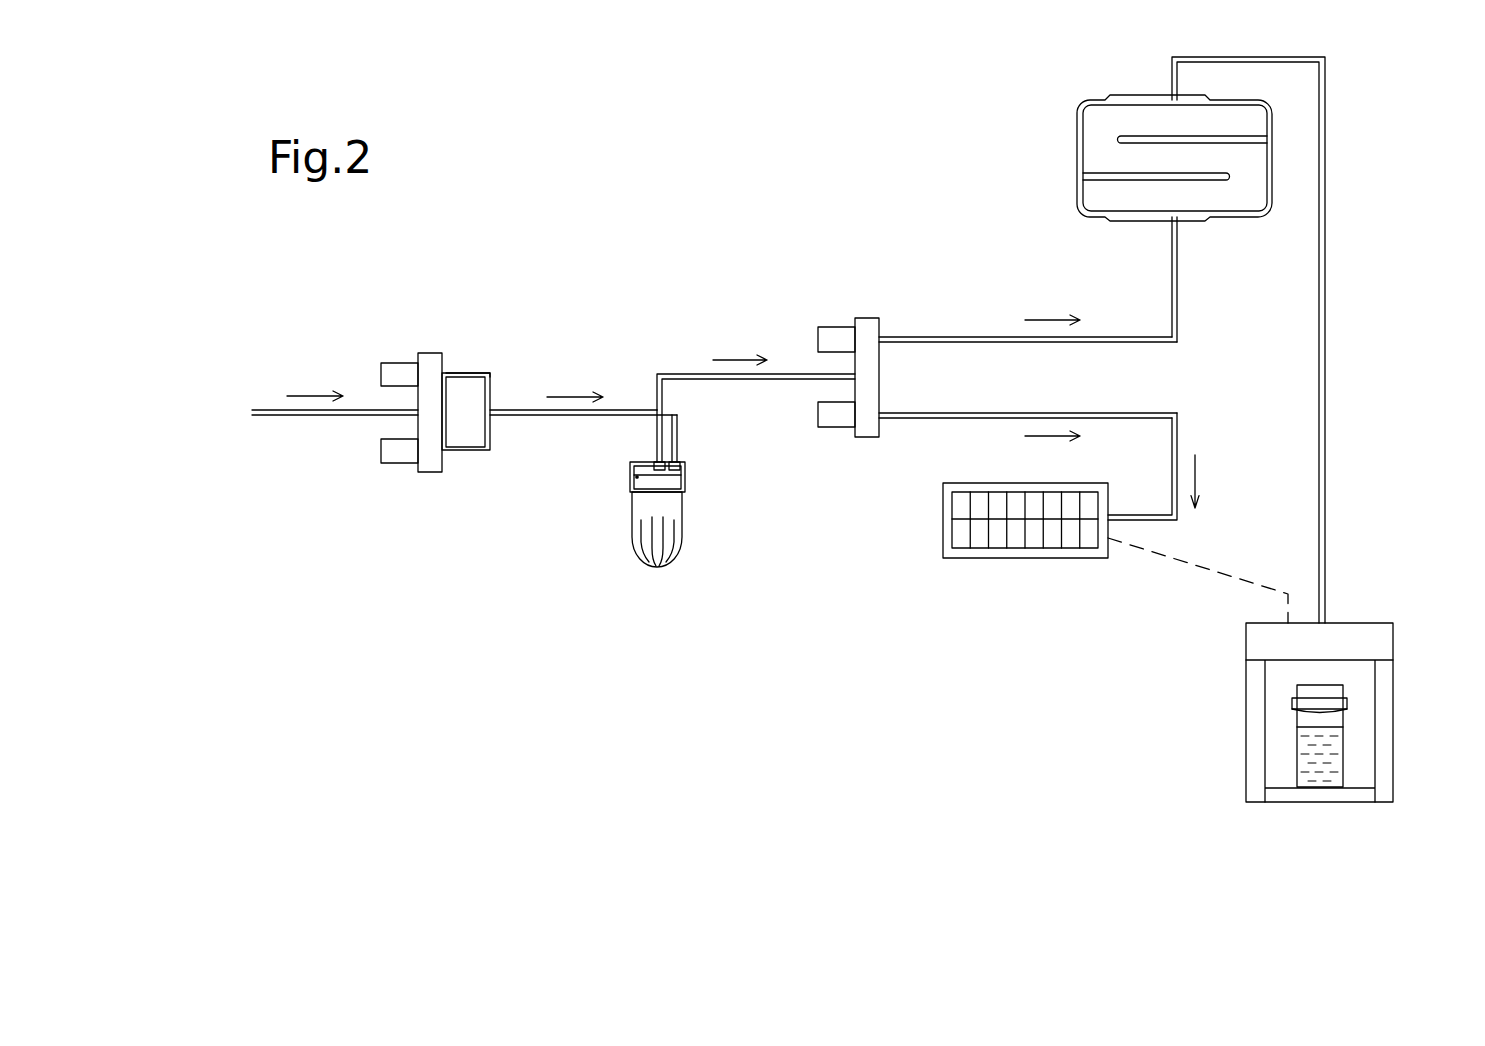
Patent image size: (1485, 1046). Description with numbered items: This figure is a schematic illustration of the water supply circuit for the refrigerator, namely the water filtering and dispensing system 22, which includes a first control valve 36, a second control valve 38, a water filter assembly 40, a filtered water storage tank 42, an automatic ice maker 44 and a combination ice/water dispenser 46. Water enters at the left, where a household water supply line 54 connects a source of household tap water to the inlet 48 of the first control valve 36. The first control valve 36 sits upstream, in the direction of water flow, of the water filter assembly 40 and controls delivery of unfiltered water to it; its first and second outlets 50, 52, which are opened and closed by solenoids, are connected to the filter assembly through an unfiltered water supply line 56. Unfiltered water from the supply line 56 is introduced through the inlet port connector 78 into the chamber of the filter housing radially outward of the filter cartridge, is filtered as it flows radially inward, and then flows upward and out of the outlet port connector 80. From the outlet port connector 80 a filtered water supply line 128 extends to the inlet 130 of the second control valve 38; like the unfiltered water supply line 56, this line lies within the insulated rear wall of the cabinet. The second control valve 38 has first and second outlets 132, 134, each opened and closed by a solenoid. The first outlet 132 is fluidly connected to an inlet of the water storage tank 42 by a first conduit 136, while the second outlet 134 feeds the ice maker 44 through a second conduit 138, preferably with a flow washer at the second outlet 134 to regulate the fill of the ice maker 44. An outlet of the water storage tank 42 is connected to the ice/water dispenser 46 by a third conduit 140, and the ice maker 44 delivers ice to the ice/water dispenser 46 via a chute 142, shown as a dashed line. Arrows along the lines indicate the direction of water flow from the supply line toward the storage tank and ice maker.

The water filtering and dispensing system 22 is at (728, 202).
The first control valve 36 is at (427, 454).
The second control valve 38 is at (854, 296).
The water filter assembly 40 is at (626, 566).
The filtered water storage tank 42 is at (1112, 100).
The automatic ice maker 44 is at (985, 570).
The combination ice/water dispenser 46 is at (1404, 628).
The inlet 48 is at (407, 415).
The first outlet 50 is at (463, 450).
The second outlet 52 is at (470, 375).
The household water supply line 54 is at (265, 415).
The unfiltered water supply line 56 is at (563, 417).
The inlet port connector 78 is at (662, 450).
The outlet port connector 80 is at (660, 450).
The filtered water supply line 128 is at (738, 382).
The inlet 130 is at (847, 373).
The first outlet 132 is at (887, 335).
The second outlet 134 is at (888, 412).
The first conduit 136 is at (1172, 283).
The second conduit 138 is at (1147, 413).
The third conduit 140 is at (1325, 350).
The chute 142 is at (1174, 575).